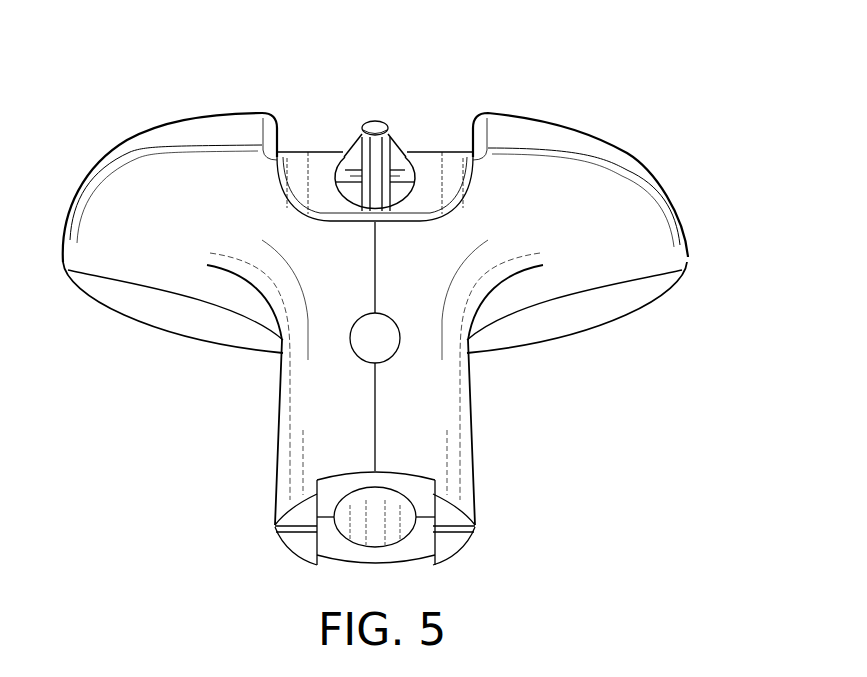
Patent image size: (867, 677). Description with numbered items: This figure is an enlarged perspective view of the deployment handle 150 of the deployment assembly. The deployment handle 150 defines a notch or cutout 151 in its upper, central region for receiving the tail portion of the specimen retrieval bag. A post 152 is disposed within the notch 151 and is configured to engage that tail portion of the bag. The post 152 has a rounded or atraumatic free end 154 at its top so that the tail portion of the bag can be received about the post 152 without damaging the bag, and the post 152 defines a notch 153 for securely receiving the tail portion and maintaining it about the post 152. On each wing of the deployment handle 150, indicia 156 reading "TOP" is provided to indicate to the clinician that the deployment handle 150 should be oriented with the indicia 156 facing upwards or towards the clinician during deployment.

The deployment handle 150 is at (620, 85).
The notch 151 is at (327, 167).
The post 152 is at (393, 108).
The notch 153 is at (338, 187).
The free end 154 is at (375, 121).
The indicia 156 is at (209, 106).